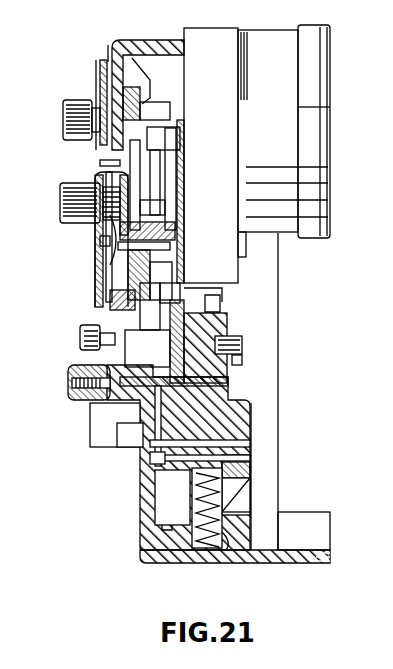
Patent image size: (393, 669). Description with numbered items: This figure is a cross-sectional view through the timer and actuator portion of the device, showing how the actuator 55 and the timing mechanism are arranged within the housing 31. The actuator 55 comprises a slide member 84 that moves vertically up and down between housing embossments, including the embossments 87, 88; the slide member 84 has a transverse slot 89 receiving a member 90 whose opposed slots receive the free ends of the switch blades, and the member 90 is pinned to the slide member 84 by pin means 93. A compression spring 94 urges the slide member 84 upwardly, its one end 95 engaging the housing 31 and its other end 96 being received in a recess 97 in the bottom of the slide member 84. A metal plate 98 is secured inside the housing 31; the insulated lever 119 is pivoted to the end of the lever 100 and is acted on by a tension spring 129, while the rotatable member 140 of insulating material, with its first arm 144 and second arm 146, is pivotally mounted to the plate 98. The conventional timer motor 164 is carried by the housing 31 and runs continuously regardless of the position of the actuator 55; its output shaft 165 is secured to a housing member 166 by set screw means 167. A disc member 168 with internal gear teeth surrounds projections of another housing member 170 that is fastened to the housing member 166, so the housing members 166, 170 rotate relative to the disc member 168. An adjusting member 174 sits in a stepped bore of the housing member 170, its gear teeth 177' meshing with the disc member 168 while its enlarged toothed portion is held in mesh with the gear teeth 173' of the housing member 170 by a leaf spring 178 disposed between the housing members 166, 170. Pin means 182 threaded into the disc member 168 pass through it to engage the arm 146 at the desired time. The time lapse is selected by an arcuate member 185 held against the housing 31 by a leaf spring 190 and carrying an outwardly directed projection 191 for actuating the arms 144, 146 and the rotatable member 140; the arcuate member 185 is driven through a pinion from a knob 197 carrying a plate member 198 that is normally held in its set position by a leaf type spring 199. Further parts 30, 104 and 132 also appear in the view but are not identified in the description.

The drive unit 30 is at (352, 53).
The housing 31 is at (300, 562).
The actuator 55 is at (256, 397).
The slide member 84 is at (252, 416).
The housing embossment 87 is at (222, 372).
The housing embossment 88 is at (240, 533).
The transverse slot 89 is at (225, 440).
The member 90 is at (222, 449).
The pin means 93 is at (250, 473).
The compression spring 94 is at (224, 540).
The end of compression spring 95 is at (190, 550).
The other end of compression spring 96 is at (250, 490).
The recess 97 is at (167, 510).
The metal plate 98 is at (185, 166).
The lever 100 is at (206, 346).
The slide 104 is at (162, 352).
The insulated lever 119 is at (210, 358).
The tension spring 129 is at (226, 326).
The detent 132 is at (222, 303).
The rotatable member 140 is at (168, 208).
The first arm 144 is at (160, 286).
The arm 146 is at (120, 298).
The timer motor 164 is at (285, 107).
The output shaft 165 is at (170, 242).
The housing member 166 is at (103, 258).
The set screw means 167 is at (168, 252).
The disc member 168 is at (100, 163).
The housing member 170 is at (100, 277).
The gear teeth 173' is at (64, 203).
The adjusting member 174 is at (100, 242).
The gear teeth 177' is at (77, 196).
The leaf spring 178 is at (112, 238).
The pin means 182 is at (84, 344).
The arcuate member 185 is at (143, 98).
The leaf spring 190 is at (138, 76).
The outwardly directed projection 191 is at (164, 112).
The knob 197 is at (70, 108).
The plate member 198 is at (100, 80).
The leaf type spring 199 is at (106, 62).